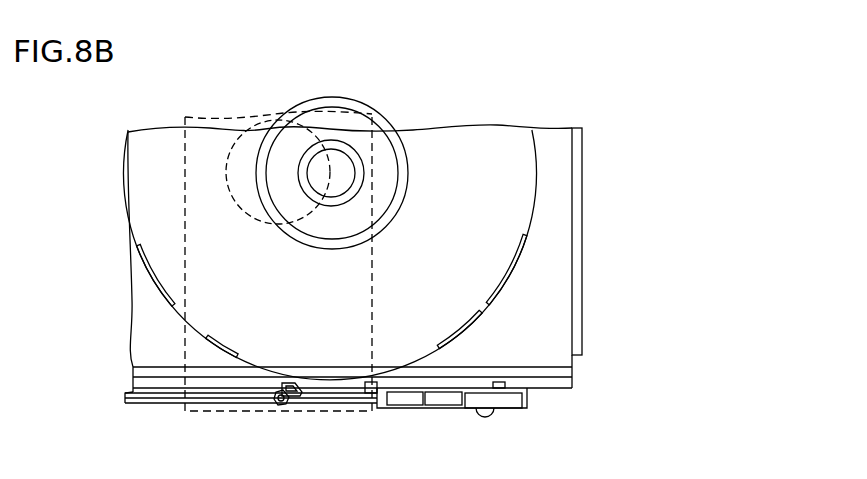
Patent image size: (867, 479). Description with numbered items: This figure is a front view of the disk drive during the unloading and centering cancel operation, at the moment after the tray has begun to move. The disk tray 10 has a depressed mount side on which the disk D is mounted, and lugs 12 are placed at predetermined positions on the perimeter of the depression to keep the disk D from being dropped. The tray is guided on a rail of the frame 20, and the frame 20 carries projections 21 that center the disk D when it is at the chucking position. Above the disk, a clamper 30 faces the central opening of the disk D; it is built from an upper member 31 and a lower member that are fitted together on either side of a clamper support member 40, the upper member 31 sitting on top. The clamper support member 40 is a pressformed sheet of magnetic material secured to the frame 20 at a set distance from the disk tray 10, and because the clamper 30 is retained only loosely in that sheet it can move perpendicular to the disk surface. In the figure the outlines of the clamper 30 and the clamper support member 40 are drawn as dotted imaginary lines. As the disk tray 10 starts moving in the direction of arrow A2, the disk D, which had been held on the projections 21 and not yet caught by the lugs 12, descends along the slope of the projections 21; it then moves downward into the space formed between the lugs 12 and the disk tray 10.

The disk tray 10 is at (596, 191).
The lugs 12 is at (185, 327).
The frame 20 is at (410, 413).
The projections 21 is at (279, 405).
The clamper 30 is at (282, 120).
The upper member 31 is at (300, 397).
The clamper support member 40 is at (208, 413).
The disk D is at (173, 262).
The arrow A2 is at (652, 330).